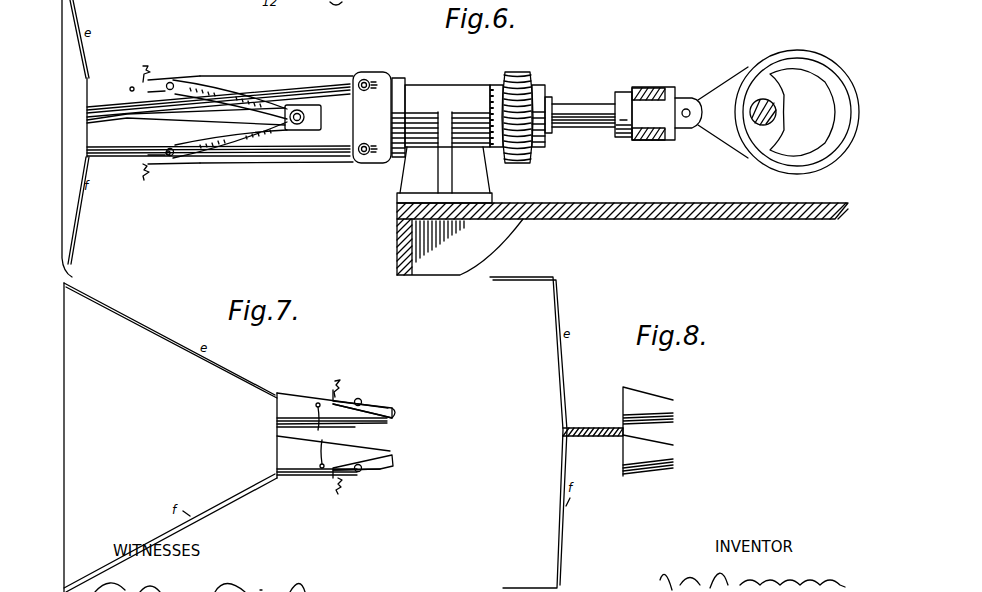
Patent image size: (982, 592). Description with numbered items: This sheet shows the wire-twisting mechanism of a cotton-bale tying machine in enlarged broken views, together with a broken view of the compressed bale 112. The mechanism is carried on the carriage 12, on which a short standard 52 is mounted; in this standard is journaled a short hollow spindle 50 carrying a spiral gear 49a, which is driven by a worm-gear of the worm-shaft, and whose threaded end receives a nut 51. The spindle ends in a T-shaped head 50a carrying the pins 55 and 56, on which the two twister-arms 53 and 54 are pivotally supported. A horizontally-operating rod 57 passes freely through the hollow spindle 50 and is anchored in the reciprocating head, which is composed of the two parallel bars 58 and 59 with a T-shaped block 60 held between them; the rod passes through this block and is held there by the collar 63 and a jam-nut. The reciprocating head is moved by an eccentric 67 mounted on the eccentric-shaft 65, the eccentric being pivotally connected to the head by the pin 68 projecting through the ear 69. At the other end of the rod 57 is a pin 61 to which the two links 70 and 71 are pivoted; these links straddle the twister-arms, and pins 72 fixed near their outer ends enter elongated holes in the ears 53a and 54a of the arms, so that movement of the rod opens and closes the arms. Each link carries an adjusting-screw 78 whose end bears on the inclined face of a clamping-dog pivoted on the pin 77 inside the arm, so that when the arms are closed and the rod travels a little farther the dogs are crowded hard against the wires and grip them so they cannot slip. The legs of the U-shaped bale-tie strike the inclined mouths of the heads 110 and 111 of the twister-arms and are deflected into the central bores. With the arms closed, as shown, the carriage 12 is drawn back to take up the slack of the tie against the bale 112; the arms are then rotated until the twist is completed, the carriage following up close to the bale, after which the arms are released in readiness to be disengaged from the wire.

In FIG. 6, the carriage 12 is at (616, 203).
In FIG. 6, the spiral gear 49a is at (518, 72).
In FIG. 6, the hollow spindle 50 is at (556, 102).
In FIG. 6, the T-shaped head 50a is at (372, 117).
In FIG. 6, the nut 51 is at (540, 86).
In FIG. 6, the short standard 52 is at (442, 85).
In FIG. 6, the twister-arm 53 is at (298, 84).
In FIG. 7, the twister-arm 53 is at (394, 410).
In FIG. 6, the ear of twister-arm 53a is at (181, 73).
In FIG. 6, the twister-arm 54 is at (276, 164).
In FIG. 7, the twister-arm 54 is at (395, 458).
In FIG. 6, the ear of twister-arm 54a is at (176, 160).
In FIG. 6, the pin 55 is at (365, 79).
In FIG. 6, the pin 56 is at (364, 156).
In FIG. 6, the horizontally-operating rod 57 is at (332, 122).
In FIG. 6, the parallel bar 58 is at (647, 88).
In FIG. 6, the parallel bar 59 is at (640, 146).
In FIG. 6, the T-shaped block 60 is at (653, 113).
In FIG. 6, the pin 61 is at (300, 124).
In FIG. 6, the collar 63 is at (622, 92).
In FIG. 6, the eccentric-shaft 65 is at (777, 108).
In FIG. 6, the eccentric 67 is at (797, 112).
In FIG. 6, the pin 68 is at (687, 108).
In FIG. 6, the ear 69 is at (711, 112).
In FIG. 6, the link 70 is at (226, 104).
In FIG. 7, the link 70 is at (378, 421).
In FIG. 6, the link 71 is at (226, 131).
In FIG. 7, the link 71 is at (386, 470).
In FIG. 6, the pin 72 is at (171, 82).
In FIG. 7, the pin 72 is at (361, 399).
In FIG. 6, the pin 77 is at (131, 86).
In FIG. 7, the pin 77 is at (320, 435).
In FIG. 6, the adjusting-screw 78 is at (146, 122).
In FIG. 7, the adjusting-screw 78 is at (349, 441).
In FIG. 6, the head of twister-arm 110 is at (218, 102).
In FIG. 7, the head of twister-arm 110 is at (332, 410).
In FIG. 8, the head of twister-arm 110 is at (648, 431).
In FIG. 6, the head of twister-arm 111 is at (218, 143).
In FIG. 7, the head of twister-arm 111 is at (333, 455).
In FIG. 8, the head of twister-arm 111 is at (648, 454).
In FIG. 6, the bale 112 is at (74, 11).
In FIG. 7, the bale 112 is at (66, 427).
In FIG. 8, the bale 112 is at (528, 432).